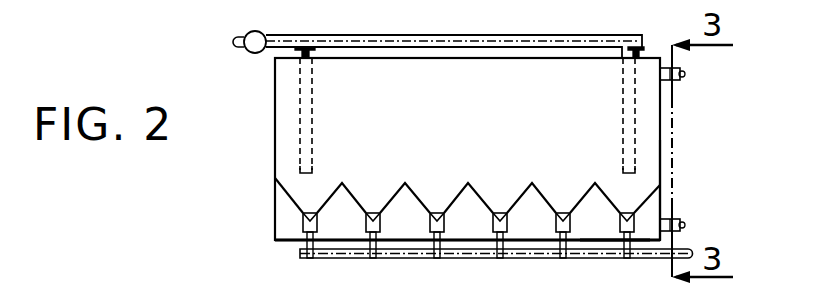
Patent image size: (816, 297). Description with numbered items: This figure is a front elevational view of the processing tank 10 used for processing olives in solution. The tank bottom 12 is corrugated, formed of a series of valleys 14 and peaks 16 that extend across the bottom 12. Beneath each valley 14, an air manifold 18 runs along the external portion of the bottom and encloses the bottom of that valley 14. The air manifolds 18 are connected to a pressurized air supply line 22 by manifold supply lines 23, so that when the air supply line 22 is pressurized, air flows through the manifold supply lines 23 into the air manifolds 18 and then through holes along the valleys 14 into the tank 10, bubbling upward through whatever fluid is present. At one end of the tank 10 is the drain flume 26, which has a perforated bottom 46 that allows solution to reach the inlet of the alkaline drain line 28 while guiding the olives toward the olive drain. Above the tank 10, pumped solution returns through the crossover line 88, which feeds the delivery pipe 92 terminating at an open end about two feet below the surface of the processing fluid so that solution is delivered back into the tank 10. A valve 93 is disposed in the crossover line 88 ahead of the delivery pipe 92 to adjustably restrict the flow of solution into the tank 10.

The processing tank 10 is at (660, 138).
The bottom 12 is at (407, 213).
The valleys 14 is at (312, 211).
The peaks 16 is at (400, 172).
The air manifold 18 is at (443, 222).
The pressurized air supply line 22 is at (688, 257).
The manifold supply lines 23 is at (618, 240).
The drain flume 26 is at (653, 198).
The alkaline drain line 28 is at (680, 229).
The perforated bottom 46 is at (686, 73).
The crossover line 88 is at (420, 35).
The delivery pipe 92 is at (318, 97).
The valve 93 is at (257, 31).